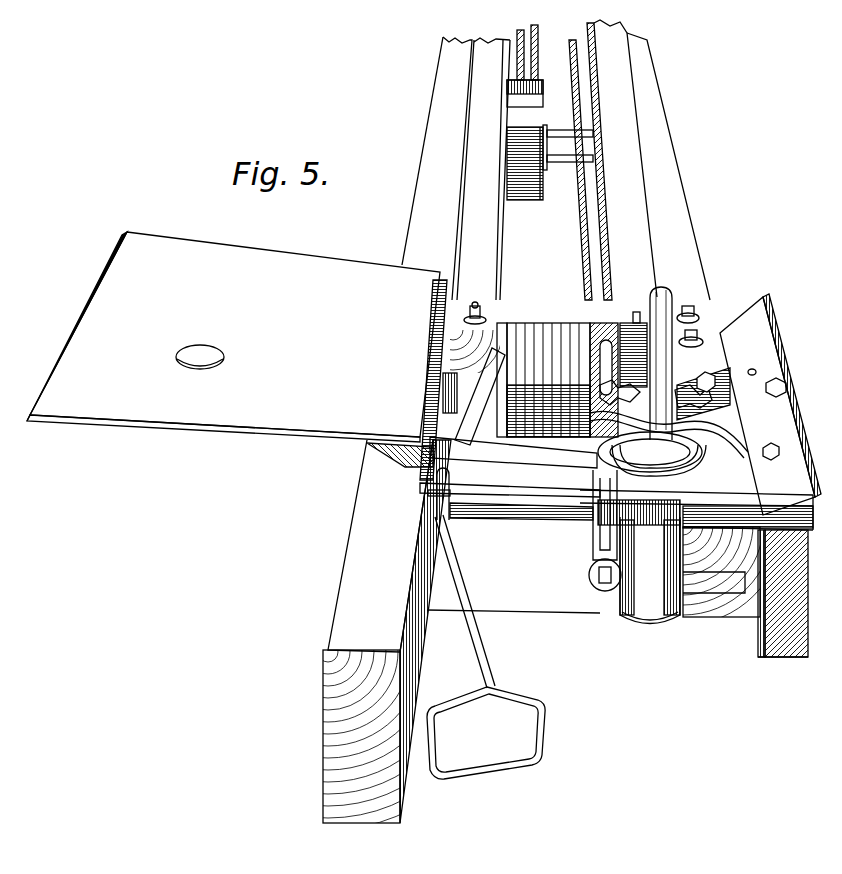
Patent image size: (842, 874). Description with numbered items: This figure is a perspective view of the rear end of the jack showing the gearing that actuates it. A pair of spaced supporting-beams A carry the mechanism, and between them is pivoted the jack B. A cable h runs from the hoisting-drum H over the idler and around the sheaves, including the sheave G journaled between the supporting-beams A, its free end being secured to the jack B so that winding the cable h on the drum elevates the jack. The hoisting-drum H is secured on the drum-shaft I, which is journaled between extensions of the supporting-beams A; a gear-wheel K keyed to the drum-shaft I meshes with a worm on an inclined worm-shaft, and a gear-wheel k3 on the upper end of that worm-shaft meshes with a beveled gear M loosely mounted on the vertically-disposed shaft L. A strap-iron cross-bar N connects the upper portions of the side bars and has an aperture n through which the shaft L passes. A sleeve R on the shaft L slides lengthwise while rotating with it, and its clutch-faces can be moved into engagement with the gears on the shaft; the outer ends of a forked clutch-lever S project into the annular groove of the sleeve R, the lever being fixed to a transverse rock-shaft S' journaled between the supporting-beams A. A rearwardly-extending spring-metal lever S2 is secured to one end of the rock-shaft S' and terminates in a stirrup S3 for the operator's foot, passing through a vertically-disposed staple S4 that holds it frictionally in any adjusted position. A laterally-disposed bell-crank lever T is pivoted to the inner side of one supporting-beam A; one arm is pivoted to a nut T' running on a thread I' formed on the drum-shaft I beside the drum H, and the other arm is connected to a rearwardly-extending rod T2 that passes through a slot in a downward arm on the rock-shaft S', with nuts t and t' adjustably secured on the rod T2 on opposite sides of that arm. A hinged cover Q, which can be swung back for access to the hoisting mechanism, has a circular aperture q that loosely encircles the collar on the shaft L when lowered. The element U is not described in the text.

The supporting-beams A is at (766, 643).
The jack B is at (557, 160).
The cable h is at (522, 53).
The sheave G is at (542, 83).
The cover Q is at (233, 337).
The circular aperture q is at (216, 364).
The hoisting-drum H is at (543, 323).
The drum-shaft I is at (507, 368).
The thread I' is at (445, 342).
The bell-crank lever T is at (493, 380).
The nut T' is at (480, 396).
The rod T2 is at (550, 493).
The rock-shaft S' is at (521, 526).
The staple S4 is at (455, 530).
The lever S2 is at (463, 588).
The stirrup S3 is at (517, 692).
The nut t is at (585, 515).
The nut t' is at (590, 583).
The forked clutch-lever S is at (650, 570).
The cylinder end U is at (642, 622).
The gear-wheel K is at (627, 323).
The gear-wheel k3 is at (656, 394).
The aperture n is at (669, 434).
The vertically-disposed shaft L is at (675, 298).
The beveled gear M is at (673, 393).
The cross-bar N is at (745, 417).
The sleeve R is at (755, 473).